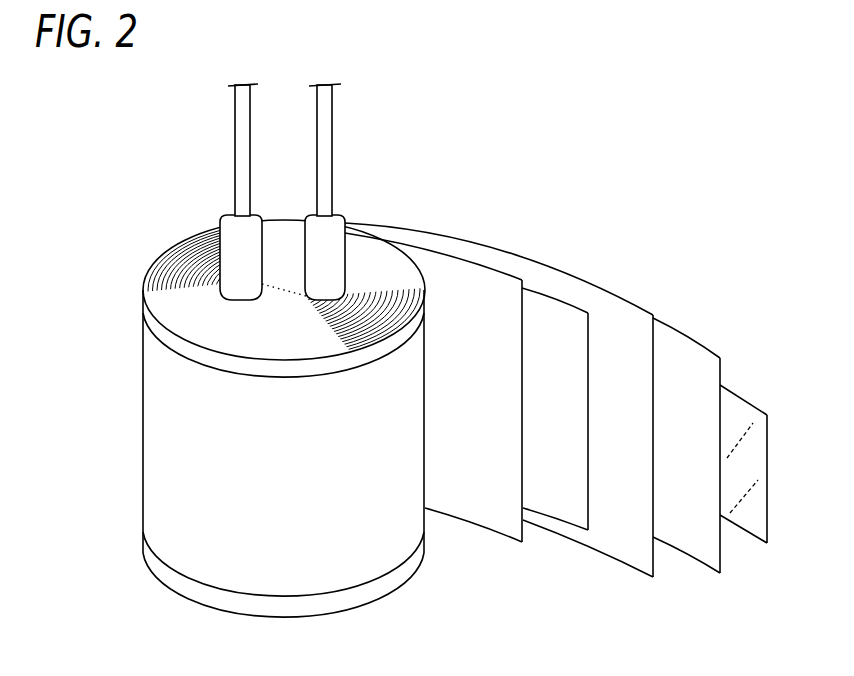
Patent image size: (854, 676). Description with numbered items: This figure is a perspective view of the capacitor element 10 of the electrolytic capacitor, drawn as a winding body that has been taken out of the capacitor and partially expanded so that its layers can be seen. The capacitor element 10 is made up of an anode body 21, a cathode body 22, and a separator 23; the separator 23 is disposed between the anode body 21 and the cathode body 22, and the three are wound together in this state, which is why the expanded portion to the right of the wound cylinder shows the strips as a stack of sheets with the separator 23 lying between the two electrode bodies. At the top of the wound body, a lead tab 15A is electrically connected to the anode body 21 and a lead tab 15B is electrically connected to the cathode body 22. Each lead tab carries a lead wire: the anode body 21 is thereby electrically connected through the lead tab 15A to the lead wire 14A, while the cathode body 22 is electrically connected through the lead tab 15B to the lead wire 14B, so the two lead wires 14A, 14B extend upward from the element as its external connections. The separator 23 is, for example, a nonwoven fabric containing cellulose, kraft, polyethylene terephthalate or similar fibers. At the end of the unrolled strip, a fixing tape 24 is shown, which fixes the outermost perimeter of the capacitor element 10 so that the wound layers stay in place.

The capacitor element 10 is at (160, 610).
The lead wire 14A is at (240, 132).
The lead wire 14B is at (327, 123).
The lead tab 15A is at (228, 226).
The lead tab 15B is at (336, 226).
The anode body 21 is at (563, 512).
The cathode body 22 is at (697, 553).
The separator 23 is at (485, 513).
The fixing tape 24 is at (762, 462).